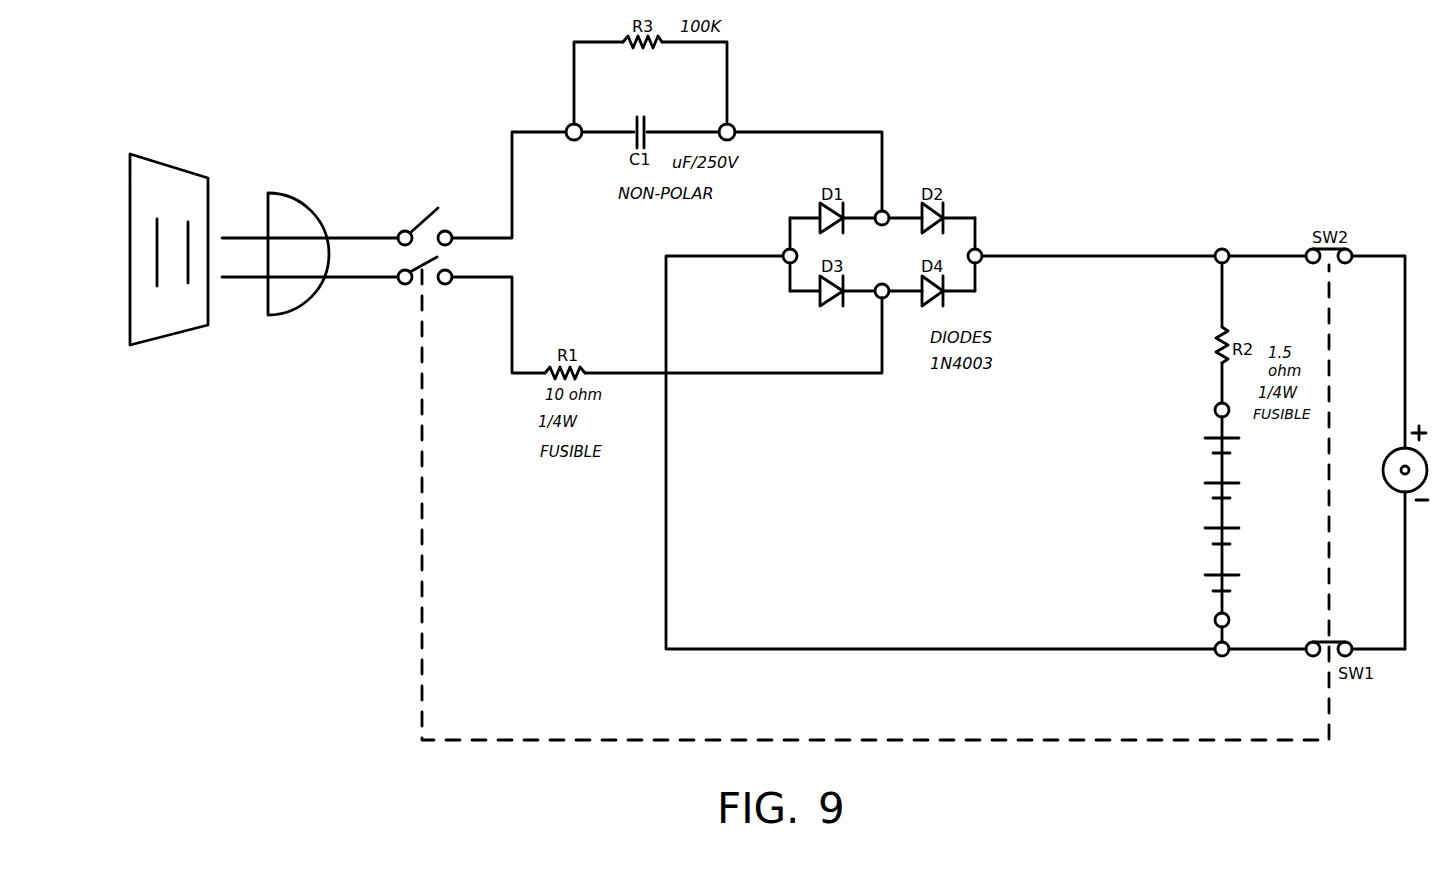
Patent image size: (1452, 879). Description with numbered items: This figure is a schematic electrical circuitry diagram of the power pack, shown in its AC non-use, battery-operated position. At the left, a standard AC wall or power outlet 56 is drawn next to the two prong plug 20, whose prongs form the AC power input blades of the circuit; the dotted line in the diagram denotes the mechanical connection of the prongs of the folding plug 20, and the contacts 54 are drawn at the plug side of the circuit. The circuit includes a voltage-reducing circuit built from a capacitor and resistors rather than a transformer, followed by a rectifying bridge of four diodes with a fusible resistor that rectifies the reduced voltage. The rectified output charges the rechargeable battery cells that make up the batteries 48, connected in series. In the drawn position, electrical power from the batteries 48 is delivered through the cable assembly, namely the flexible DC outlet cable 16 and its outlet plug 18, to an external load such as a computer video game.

The AC wall or power outlet 56 is at (173, 312).
The two prong plug 20 is at (292, 295).
The switch 54 is at (442, 246).
The batteries 48 is at (1202, 435).
The flexible DC outlet cable 16 is at (1403, 375).
The outlet plug 18 is at (1393, 488).